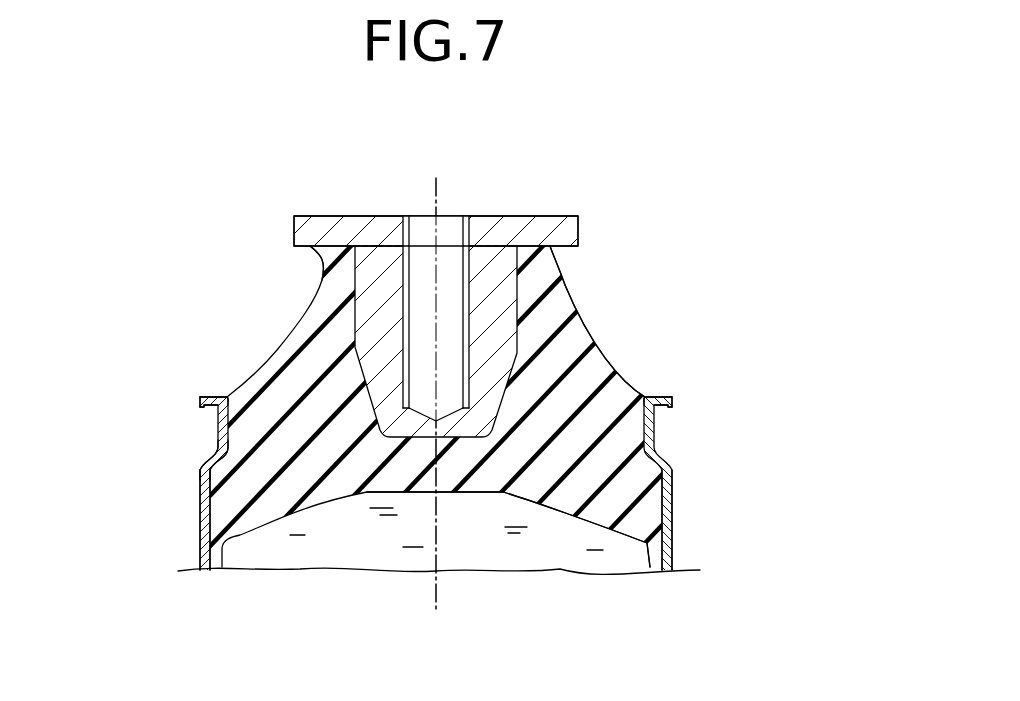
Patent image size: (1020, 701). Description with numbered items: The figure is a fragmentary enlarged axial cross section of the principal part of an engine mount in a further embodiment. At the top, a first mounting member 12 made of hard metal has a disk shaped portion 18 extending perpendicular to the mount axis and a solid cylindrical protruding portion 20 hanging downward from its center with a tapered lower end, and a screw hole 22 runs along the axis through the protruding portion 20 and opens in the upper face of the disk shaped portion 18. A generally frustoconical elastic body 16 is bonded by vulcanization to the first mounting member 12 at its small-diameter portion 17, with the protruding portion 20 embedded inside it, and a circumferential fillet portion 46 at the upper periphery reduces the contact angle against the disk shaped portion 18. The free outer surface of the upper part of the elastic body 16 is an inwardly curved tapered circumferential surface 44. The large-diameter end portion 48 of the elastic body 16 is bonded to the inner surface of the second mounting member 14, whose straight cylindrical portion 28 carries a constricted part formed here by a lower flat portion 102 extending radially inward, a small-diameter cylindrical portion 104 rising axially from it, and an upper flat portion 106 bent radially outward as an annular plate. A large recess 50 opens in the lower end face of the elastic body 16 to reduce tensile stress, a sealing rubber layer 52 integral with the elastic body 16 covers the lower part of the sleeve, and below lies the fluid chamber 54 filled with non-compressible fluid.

The first mounting member 12 is at (563, 213).
The second mounting member 14 is at (679, 532).
The elastic body 16 is at (547, 313).
The small-diameter portion 17 is at (533, 278).
The disk shaped portion 18 is at (333, 227).
The protruding portion 20 is at (370, 319).
The screw hole 22 is at (463, 277).
The cylindrical portion 28 is at (200, 518).
The tapered circumferential surface 44 is at (587, 327).
The fillet portion 46 is at (327, 252).
The large-diameter end portion 48 is at (650, 503).
The recess 50 is at (473, 492).
The sealing rubber layer 52 is at (656, 548).
The fluid chamber 54 is at (347, 547).
The lower flat portion 102 is at (200, 454).
The small-diameter cylindrical portion 104 is at (205, 418).
The upper flat portion 106 is at (667, 394).